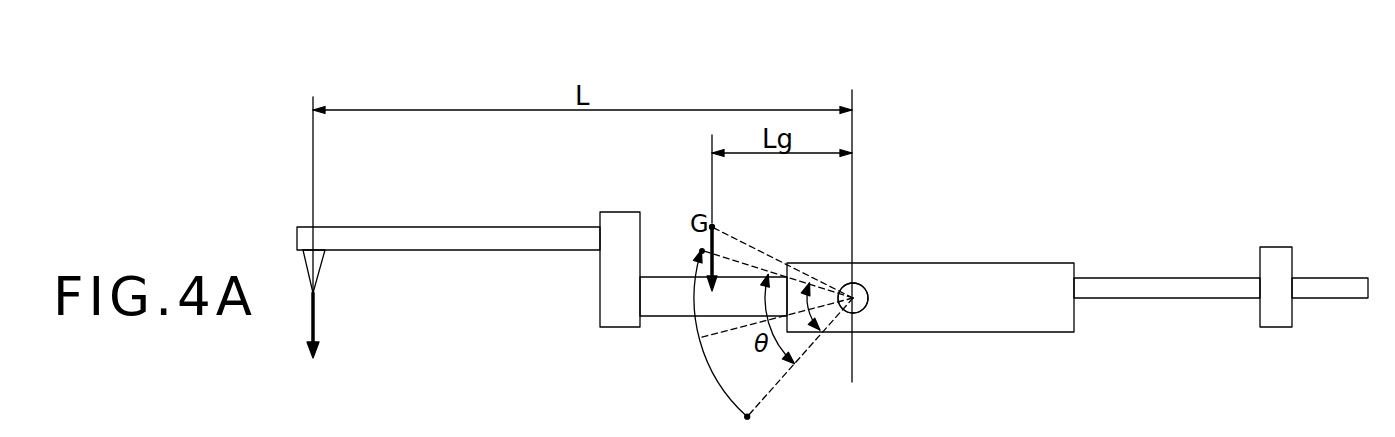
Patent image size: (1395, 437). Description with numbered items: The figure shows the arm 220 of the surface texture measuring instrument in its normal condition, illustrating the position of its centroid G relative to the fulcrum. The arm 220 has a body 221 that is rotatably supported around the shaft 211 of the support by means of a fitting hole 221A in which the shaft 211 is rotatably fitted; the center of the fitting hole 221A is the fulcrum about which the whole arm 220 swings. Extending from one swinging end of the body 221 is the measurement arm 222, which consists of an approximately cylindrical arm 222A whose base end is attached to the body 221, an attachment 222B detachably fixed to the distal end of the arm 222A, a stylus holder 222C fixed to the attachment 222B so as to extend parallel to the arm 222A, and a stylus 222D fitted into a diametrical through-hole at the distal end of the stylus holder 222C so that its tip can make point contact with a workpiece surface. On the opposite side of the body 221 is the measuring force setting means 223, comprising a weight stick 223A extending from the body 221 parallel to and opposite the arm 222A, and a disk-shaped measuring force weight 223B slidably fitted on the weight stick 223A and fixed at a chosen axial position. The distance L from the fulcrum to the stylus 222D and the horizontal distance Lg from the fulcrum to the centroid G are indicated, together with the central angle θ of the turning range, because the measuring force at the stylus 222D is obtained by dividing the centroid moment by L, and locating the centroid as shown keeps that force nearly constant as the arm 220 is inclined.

The arm 220 is at (1062, 213).
The body 221 is at (1023, 332).
The fitting hole 221A is at (865, 292).
The shaft 211 is at (868, 309).
The measurement arm 222 is at (422, 237).
The arm 222A is at (678, 310).
The attachment 222B is at (620, 320).
The stylus holder 222C is at (517, 240).
The stylus 222D is at (323, 273).
The measuring force setting means 223 is at (1152, 300).
The weight stick 223A is at (1343, 282).
The measuring force weight 223B is at (1293, 313).